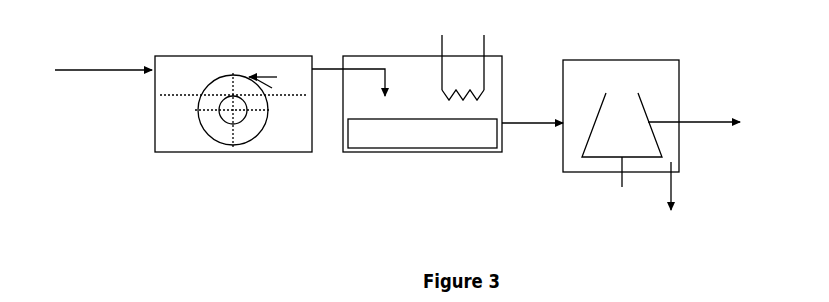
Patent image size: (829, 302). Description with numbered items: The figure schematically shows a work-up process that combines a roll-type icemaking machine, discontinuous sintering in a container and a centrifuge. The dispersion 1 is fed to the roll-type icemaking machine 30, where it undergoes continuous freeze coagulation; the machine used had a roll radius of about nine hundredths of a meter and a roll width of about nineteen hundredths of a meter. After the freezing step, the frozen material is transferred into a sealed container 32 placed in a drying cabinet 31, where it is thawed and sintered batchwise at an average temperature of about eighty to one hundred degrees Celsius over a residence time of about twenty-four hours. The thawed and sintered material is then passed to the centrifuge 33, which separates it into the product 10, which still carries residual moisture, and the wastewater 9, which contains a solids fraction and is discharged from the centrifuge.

The dispersion 1 is at (91, 72).
The roll-type icemaking machine 30 is at (233, 88).
The drying cabinet 31 is at (422, 88).
The container 32 is at (422, 118).
The centrifuge 33 is at (621, 107).
The product 10 is at (710, 124).
The wastewater 9 is at (672, 201).